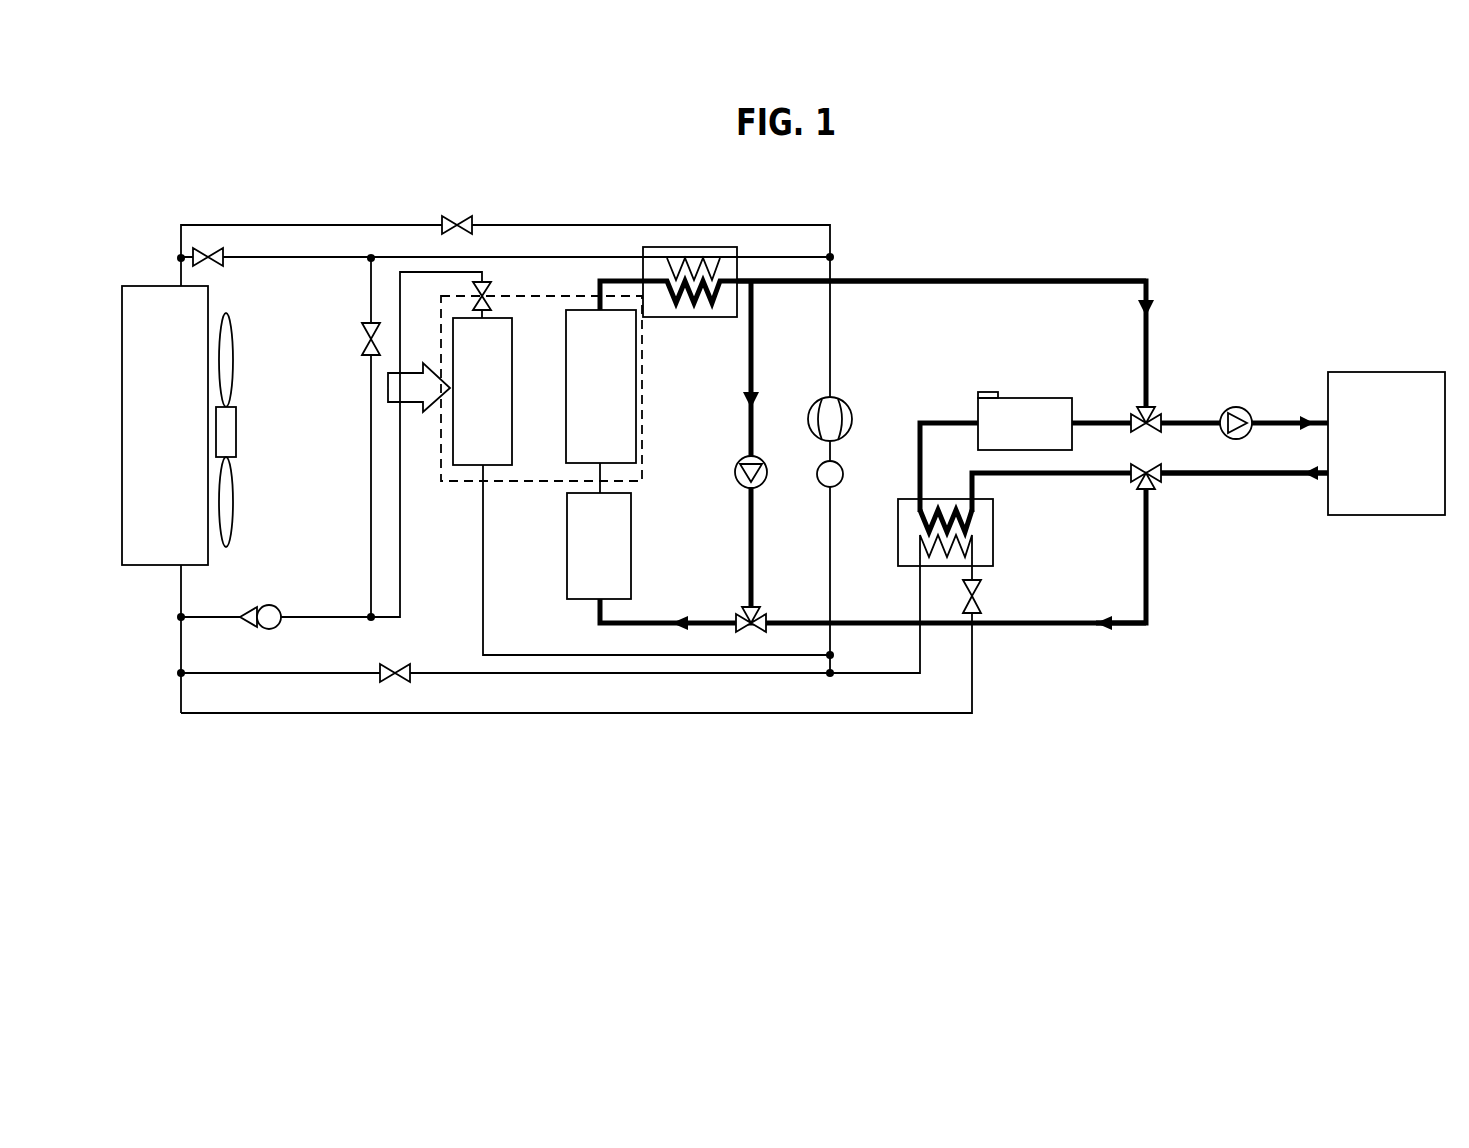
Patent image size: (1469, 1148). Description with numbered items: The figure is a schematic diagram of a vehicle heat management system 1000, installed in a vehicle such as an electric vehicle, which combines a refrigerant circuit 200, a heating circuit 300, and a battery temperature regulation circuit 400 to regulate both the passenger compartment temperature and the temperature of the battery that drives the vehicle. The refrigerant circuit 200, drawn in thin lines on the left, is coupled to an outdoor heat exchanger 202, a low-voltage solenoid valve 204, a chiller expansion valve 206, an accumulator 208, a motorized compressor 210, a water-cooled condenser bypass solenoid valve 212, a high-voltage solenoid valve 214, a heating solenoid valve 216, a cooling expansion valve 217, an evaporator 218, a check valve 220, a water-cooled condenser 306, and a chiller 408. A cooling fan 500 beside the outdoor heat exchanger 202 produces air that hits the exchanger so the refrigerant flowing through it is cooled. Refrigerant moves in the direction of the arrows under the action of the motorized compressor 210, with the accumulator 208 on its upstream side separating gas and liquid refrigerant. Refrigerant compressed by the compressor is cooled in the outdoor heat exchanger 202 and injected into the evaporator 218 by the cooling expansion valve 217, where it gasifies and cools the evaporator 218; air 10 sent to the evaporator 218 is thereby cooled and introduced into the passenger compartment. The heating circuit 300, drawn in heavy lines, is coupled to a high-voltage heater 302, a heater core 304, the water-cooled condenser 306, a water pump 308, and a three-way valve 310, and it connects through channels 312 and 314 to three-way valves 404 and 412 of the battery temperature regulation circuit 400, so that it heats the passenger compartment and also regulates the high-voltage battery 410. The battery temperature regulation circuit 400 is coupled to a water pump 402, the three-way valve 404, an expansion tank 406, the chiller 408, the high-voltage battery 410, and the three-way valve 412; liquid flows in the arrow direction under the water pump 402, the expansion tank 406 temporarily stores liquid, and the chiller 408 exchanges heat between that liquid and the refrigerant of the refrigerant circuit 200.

The heat management system 1000 is at (1422, 891).
The refrigerant circuit 200 is at (870, 713).
The outdoor heat exchanger 202 is at (205, 567).
The cooling fan 500 is at (228, 316).
The heating solenoid valve 216 is at (205, 252).
The water-cooled condenser bypass solenoid valve 212 is at (472, 228).
The high-voltage solenoid valve 214 is at (369, 322).
The cooling expansion valve 217 is at (491, 286).
The air 10 is at (415, 404).
The evaporator 218 is at (475, 481).
The check valve 220 is at (252, 626).
The low-voltage solenoid valve 204 is at (410, 677).
The motorized compressor 210 is at (852, 413).
The accumulator 208 is at (843, 470).
The heating circuit 300 is at (755, 334).
The water-cooled condenser 306 is at (690, 318).
The heater core 304 is at (637, 401).
The high-voltage heater 302 is at (632, 522).
The water pump 308 is at (735, 472).
The three-way valve 310 is at (748, 612).
The channel 312 is at (1010, 278).
The expansion tank 406 is at (1025, 396).
The three-way valve 404 is at (1133, 418).
The water pump 402 is at (1238, 406).
The high-voltage battery 410 is at (1385, 372).
The three-way valve 412 is at (1135, 480).
The battery temperature regulation circuit 400 is at (1188, 478).
The chiller 408 is at (897, 532).
The chiller expansion valve 206 is at (982, 598).
The channel 314 is at (1130, 628).